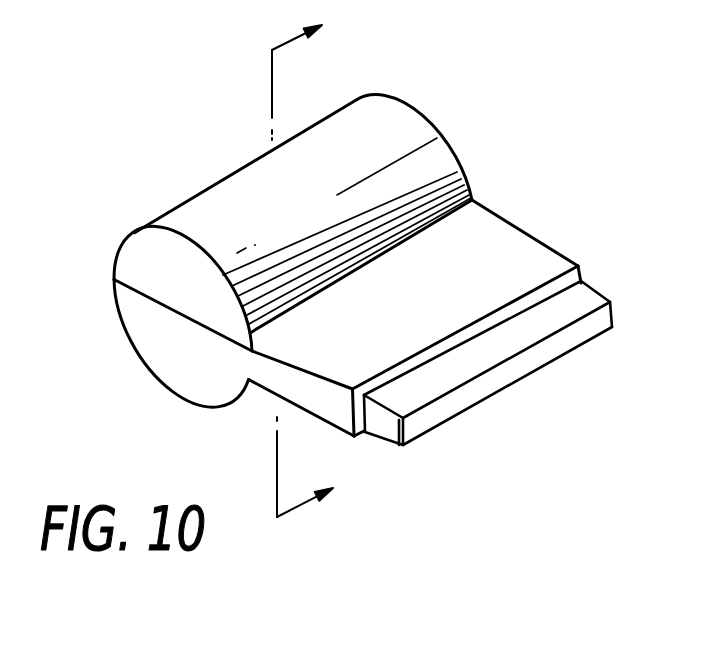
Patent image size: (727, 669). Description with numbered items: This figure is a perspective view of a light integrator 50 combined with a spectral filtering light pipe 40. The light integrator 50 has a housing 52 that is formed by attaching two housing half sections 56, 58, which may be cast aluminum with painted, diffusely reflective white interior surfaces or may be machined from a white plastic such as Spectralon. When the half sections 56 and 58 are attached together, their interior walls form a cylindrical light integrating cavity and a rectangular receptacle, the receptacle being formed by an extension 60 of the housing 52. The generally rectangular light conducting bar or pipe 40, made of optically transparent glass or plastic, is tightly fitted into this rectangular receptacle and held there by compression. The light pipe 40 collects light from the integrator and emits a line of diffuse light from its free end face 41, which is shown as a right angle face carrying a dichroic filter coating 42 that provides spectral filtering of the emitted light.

The light integrator 50 is at (450, 85).
The housing half section 56 is at (153, 252).
The housing half section 58 is at (153, 341).
The housing 52 is at (248, 378).
The extension 60 is at (533, 256).
The spectral filtering light pipe 40 is at (571, 305).
The free end face 41 is at (582, 331).
The dichroic filter coating 42 is at (403, 445).